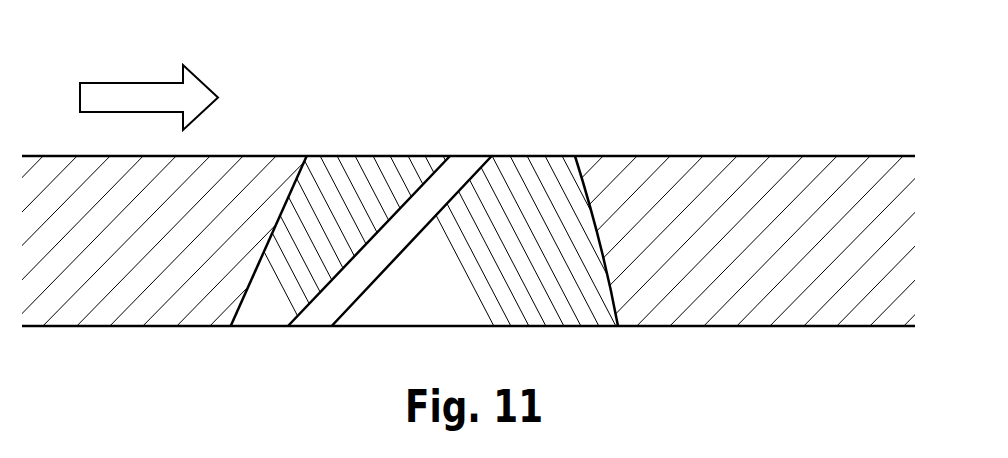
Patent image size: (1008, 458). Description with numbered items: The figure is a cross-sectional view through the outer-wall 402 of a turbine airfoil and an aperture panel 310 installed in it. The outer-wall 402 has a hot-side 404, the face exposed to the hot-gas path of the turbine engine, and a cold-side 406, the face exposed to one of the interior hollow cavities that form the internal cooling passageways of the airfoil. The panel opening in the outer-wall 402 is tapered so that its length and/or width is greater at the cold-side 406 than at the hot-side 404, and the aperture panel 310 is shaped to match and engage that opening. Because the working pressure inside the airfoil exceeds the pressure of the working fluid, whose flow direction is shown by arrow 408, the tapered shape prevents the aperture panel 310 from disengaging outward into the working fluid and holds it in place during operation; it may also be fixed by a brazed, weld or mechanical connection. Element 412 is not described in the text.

The aperture panel 310 is at (353, 200).
The outer-wall 402 is at (168, 253).
The hot-side 404 is at (717, 157).
The cold-side 406 is at (747, 327).
The arrow 408 is at (135, 97).
The splice / bonded strip 412 is at (392, 242).